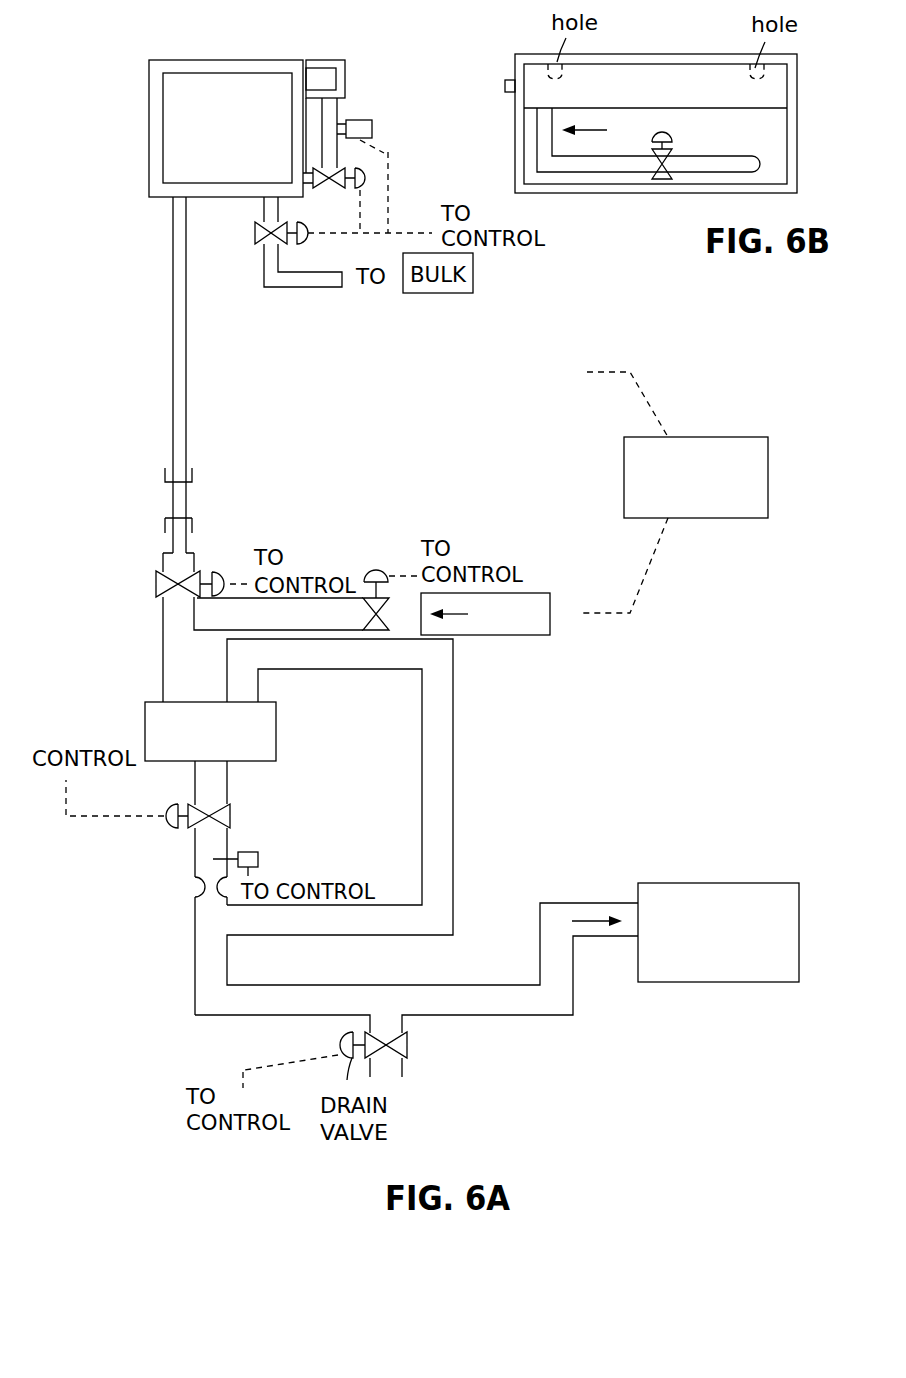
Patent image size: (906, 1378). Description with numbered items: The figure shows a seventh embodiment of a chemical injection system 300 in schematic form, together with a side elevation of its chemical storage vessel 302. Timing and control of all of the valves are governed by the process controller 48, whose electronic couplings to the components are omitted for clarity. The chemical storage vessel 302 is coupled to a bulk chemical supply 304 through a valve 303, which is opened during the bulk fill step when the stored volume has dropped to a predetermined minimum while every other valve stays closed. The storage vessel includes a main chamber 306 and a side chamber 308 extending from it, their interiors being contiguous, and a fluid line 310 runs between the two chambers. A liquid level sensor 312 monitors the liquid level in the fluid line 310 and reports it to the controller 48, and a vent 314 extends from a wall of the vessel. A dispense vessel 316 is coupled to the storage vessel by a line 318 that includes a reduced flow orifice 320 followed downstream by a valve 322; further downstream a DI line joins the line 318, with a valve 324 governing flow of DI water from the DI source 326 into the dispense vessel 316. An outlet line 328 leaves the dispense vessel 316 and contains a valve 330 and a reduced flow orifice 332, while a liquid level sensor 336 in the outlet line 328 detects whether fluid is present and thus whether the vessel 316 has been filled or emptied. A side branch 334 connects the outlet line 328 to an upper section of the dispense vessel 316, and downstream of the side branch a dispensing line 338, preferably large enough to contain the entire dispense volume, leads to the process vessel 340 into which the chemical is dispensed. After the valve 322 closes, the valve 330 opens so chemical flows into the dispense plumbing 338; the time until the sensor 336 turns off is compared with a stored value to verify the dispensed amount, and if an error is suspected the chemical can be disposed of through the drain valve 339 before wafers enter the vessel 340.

In FIG. 6A, the chemical injection system 300 is at (492, 340).
In FIG. 6A, the chemical storage vessel 302 is at (148, 175).
In FIG. 6A, the valve 303 is at (255, 234).
In FIG. 6A, the bulk chemical supply 304 is at (342, 280).
In FIG. 6A, the main chamber 306 is at (194, 85).
In FIG. 6A, the side chamber 308 is at (321, 72).
In FIG. 6A, the fluid line 310 is at (328, 155).
In FIG. 6A, the liquid level sensor 312 is at (372, 127).
In FIG. 6B, the vent 314 is at (508, 94).
In FIG. 6A, the dispense vessel 316 is at (236, 749).
In FIG. 6A, the line 318 is at (175, 400).
In FIG. 6A, the reduced flow orifice 320 is at (177, 497).
In FIG. 6A, the valve 322 is at (227, 560).
In FIG. 6A, the valve 324 is at (375, 568).
In FIG. 6A, the DI source 326 is at (536, 595).
In FIG. 6A, the outlet line 328 is at (232, 817).
In FIG. 6A, the valve 330 is at (163, 811).
In FIG. 6A, the reduced flow orifice 332 is at (196, 886).
In FIG. 6A, the side branch 334 is at (442, 705).
In FIG. 6A, the liquid level sensor 336 is at (257, 851).
In FIG. 6A, the dispensing line 338 is at (465, 993).
In FIG. 6A, the drain valve 339 is at (338, 1040).
In FIG. 6A, the vessel 340 is at (800, 920).
In FIG. 6A, the process controller 48 is at (730, 437).